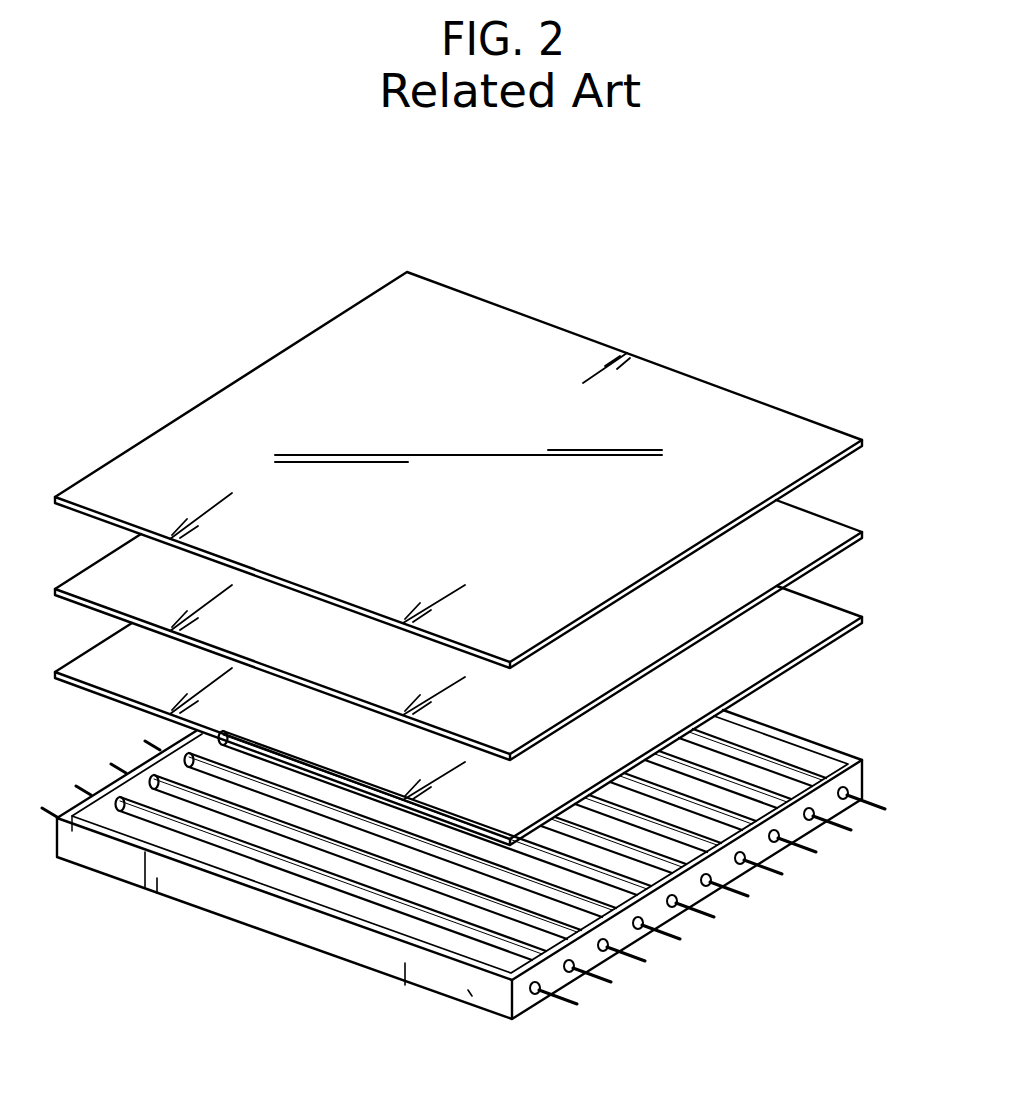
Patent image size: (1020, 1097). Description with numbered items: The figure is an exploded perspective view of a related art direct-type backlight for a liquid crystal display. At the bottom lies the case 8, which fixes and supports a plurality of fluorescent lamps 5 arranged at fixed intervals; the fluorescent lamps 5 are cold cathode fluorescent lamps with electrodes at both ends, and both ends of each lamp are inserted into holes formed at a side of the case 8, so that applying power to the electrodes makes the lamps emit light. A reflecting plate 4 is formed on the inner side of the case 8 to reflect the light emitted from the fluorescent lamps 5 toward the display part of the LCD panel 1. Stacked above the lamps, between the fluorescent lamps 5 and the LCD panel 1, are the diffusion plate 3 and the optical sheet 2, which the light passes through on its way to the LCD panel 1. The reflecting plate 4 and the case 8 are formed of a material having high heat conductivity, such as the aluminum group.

The LCD panel 1 is at (757, 418).
The optical sheet 2 is at (805, 528).
The diffusion plate 3 is at (823, 613).
The reflecting plate 4 is at (327, 893).
The fluorescent lamps 5 is at (248, 845).
The case 8 is at (475, 993).